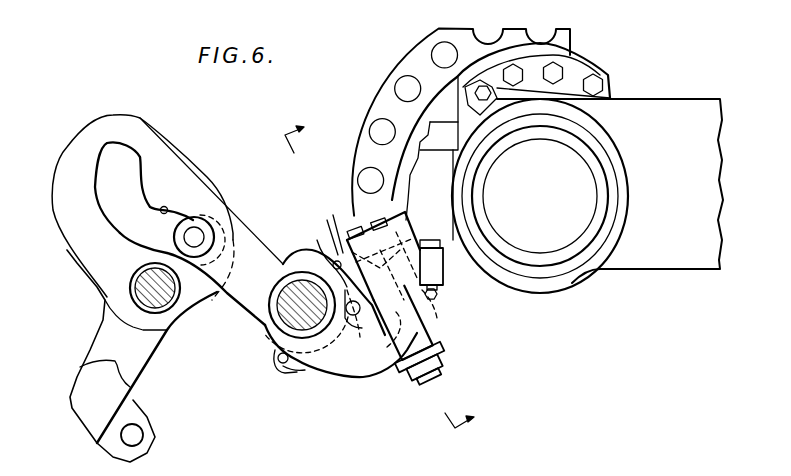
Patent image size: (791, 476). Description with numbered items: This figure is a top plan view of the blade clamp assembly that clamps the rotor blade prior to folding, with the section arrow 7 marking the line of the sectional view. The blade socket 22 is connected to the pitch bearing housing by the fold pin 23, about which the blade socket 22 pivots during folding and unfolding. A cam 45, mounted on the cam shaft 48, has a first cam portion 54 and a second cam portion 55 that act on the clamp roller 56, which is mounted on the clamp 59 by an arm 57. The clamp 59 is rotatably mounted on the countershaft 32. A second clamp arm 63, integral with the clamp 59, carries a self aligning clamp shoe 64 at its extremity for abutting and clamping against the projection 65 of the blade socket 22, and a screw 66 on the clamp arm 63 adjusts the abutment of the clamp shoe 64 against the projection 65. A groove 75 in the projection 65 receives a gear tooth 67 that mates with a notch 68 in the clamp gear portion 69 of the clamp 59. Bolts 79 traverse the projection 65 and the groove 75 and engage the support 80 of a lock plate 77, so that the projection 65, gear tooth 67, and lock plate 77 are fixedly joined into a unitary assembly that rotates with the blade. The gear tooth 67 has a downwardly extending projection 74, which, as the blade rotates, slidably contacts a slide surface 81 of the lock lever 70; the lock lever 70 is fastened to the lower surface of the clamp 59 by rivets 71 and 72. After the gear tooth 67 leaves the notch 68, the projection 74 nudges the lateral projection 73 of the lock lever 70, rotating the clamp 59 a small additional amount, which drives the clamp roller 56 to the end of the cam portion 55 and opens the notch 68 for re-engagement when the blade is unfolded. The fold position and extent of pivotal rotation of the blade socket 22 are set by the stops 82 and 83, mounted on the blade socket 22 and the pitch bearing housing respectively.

The blade socket 22 is at (694, 102).
The fold pin 23 is at (587, 187).
The countershaft 32 is at (283, 313).
The cam 45 is at (83, 405).
The cam shaft 48 is at (140, 297).
The first cam portion 54 is at (166, 206).
The second cam portion 55 is at (132, 157).
The clamp roller 56 is at (165, 236).
The arm 57 is at (232, 294).
The clamp 59 is at (273, 337).
The second clamp arm 63 is at (353, 378).
The self aligning clamp shoe 64 is at (386, 327).
The projection of the blade socket 65 is at (403, 323).
The screw 66 is at (418, 388).
The gear tooth 67 is at (331, 231).
The notch 68 is at (335, 262).
The clamp gear portion 69 is at (303, 258).
The lock lever 70 is at (299, 372).
The rivet 71 is at (365, 323).
The rivet 72 is at (278, 366).
The lateral projection 73 is at (387, 261).
The downwardly extending projection 74 is at (376, 251).
The groove 75 is at (425, 297).
The lock plate 77 is at (418, 63).
The bolts 79 is at (360, 218).
The support 80 is at (396, 207).
The slide surface 81 is at (413, 235).
The stop 82 is at (468, 97).
The stop 83 is at (444, 270).
The section line for FIG. 7 is at (386, 272).